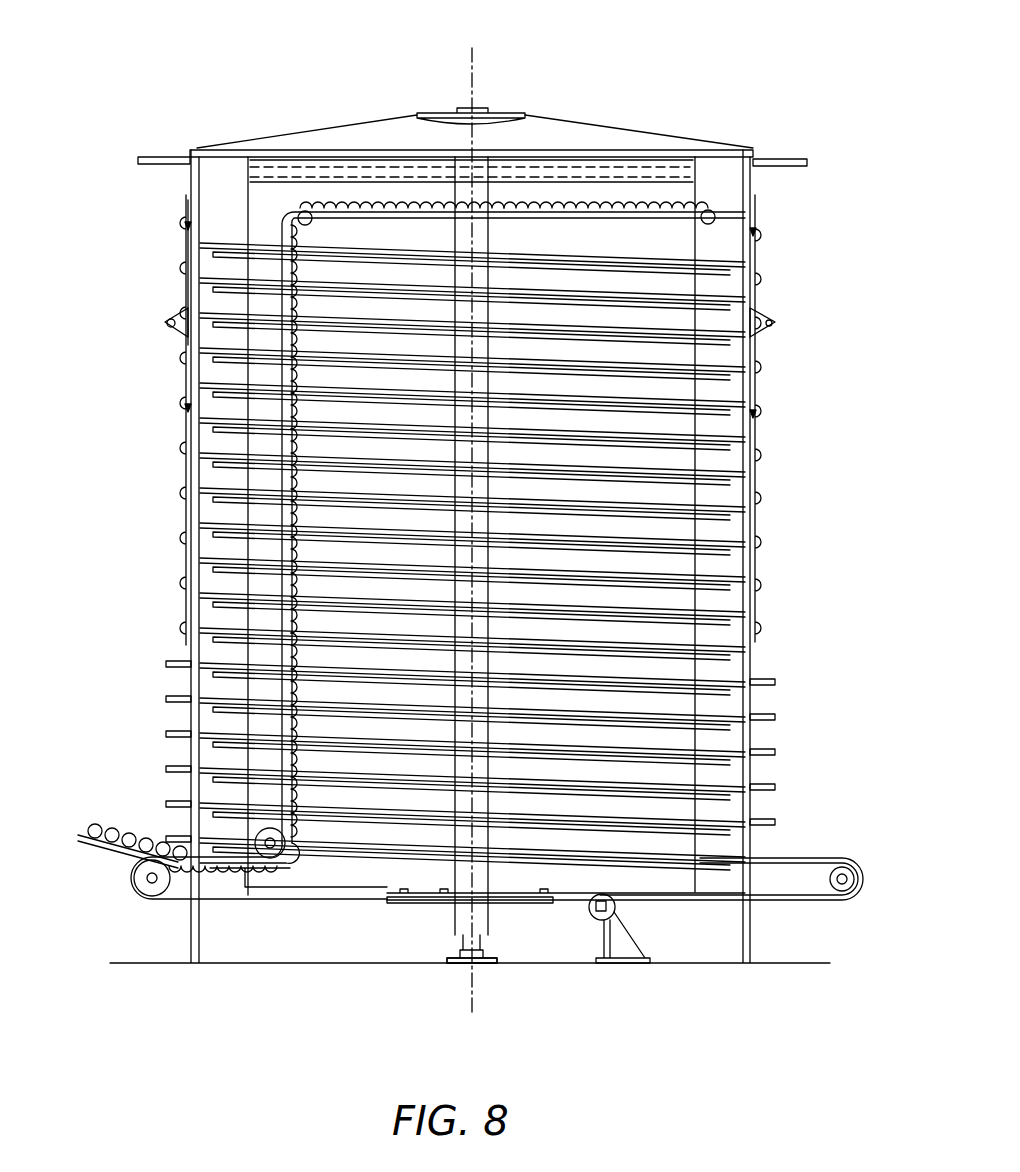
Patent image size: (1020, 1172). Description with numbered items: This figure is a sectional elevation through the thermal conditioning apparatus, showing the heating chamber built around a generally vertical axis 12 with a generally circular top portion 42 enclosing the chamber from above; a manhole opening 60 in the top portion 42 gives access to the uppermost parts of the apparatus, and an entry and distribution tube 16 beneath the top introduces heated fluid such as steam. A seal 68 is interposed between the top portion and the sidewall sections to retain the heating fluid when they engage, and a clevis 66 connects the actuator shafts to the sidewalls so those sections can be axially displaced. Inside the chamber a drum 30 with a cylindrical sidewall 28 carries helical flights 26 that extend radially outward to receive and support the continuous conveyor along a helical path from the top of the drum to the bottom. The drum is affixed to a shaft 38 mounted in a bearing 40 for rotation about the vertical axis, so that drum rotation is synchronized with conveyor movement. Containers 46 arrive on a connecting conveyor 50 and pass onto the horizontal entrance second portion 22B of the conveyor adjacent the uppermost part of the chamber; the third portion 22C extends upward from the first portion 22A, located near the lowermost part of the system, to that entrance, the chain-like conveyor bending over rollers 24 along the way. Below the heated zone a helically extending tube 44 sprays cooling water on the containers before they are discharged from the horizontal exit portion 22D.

The vertical axis 12 is at (473, 72).
The circular top portion 42 is at (305, 133).
The manhole opening 60 is at (520, 113).
The entry and distribution tube 16 is at (628, 168).
The seal 68 is at (188, 228).
The clevis 66 is at (776, 322).
The second portion of conveyor 22B is at (638, 225).
The cylindrical sidewall of drum 28 is at (698, 456).
The helical flights 26 is at (718, 546).
The third portion of conveyor 22C is at (200, 612).
The helically extending tube 44 is at (776, 720).
The containers 46 is at (100, 833).
The connecting conveyor 50 is at (128, 843).
The rollers 24 is at (142, 884).
The first portion of conveyor 22A is at (240, 898).
The shaft 38 is at (455, 915).
The bearing 40 is at (460, 950).
The drum 30 is at (660, 878).
The horizontal portion of conveyor 22D is at (812, 858).